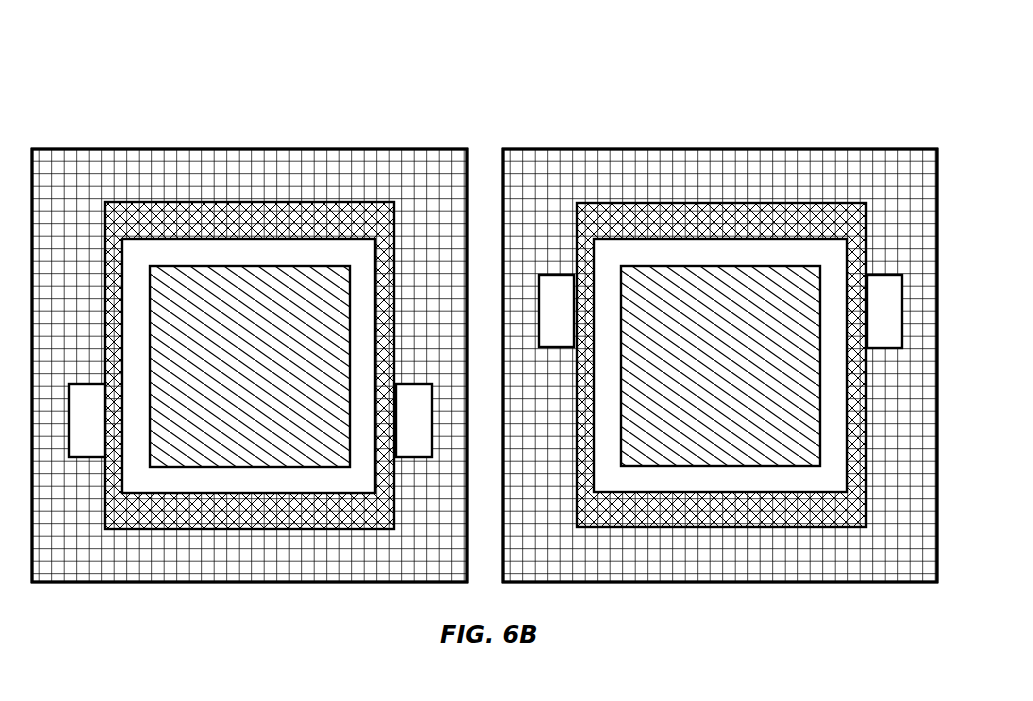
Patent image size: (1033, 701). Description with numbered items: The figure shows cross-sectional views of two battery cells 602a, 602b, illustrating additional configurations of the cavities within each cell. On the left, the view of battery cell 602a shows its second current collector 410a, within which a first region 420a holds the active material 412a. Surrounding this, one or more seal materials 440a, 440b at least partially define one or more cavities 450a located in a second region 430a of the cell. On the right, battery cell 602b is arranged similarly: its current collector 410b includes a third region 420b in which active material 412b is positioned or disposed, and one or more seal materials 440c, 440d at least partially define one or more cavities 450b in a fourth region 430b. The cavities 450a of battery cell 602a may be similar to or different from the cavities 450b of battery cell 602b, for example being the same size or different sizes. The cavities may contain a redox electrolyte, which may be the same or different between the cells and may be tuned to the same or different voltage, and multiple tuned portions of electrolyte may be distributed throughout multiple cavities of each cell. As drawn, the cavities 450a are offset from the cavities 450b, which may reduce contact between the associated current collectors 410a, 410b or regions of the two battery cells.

The battery cell 602a is at (146, 89).
The battery cell 602b is at (628, 89).
The second current collector 410a is at (215, 583).
The current collector 410b is at (676, 150).
The active material 412a is at (172, 266).
The active material 412b is at (638, 465).
The first region 420a is at (233, 240).
The third region 420b is at (702, 492).
The second region 430a is at (415, 150).
The fourth region 430b is at (882, 583).
The seal material 440a is at (330, 203).
The seal material 440b is at (105, 583).
The seal material 440c is at (785, 528).
The seal material 440d is at (757, 150).
The cavity 450a is at (413, 458).
The cavity 450b is at (878, 275).